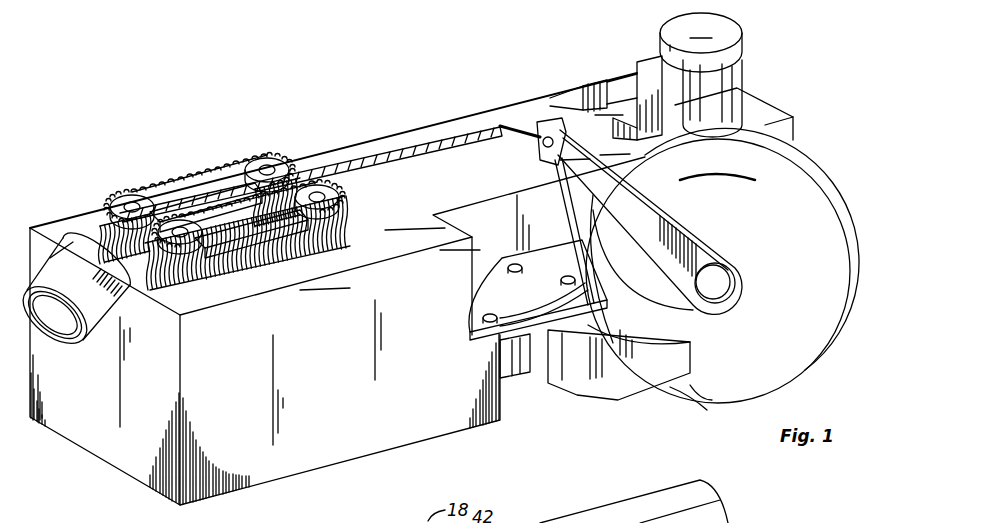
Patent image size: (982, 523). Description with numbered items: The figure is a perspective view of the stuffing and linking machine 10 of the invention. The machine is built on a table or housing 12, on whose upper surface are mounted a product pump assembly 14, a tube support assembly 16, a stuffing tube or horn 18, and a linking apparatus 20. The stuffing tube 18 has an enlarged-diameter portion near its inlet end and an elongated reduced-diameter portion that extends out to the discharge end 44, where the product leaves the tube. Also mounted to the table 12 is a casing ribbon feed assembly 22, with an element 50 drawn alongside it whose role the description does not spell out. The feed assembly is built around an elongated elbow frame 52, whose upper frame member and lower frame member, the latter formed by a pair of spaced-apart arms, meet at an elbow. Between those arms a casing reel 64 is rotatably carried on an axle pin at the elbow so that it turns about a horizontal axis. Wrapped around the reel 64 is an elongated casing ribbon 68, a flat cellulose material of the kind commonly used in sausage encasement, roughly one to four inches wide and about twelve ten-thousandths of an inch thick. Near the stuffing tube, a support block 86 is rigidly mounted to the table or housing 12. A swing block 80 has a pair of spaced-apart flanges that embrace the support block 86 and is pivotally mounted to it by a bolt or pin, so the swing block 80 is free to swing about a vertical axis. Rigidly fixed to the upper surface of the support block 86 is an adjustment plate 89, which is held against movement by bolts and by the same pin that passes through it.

The stuffing and linking machine 10 is at (787, 81).
The table or housing 12 is at (783, 101).
The product pump assembly 14 is at (742, 42).
The tube support assembly 16 is at (638, 64).
The stuffing tube or horn 18 is at (560, 97).
The linking apparatus 20 is at (219, 146).
The casing ribbon feed assembly 22 is at (808, 155).
The discharge end 44 is at (556, 172).
The guide rail 50 is at (470, 133).
The elongated elbow frame 52 is at (700, 402).
The casing reel 64 is at (740, 410).
The casing ribbon 68 is at (505, 120).
The swing block 80 is at (543, 395).
The support block 86 is at (528, 375).
The adjustment plate 89 is at (490, 295).